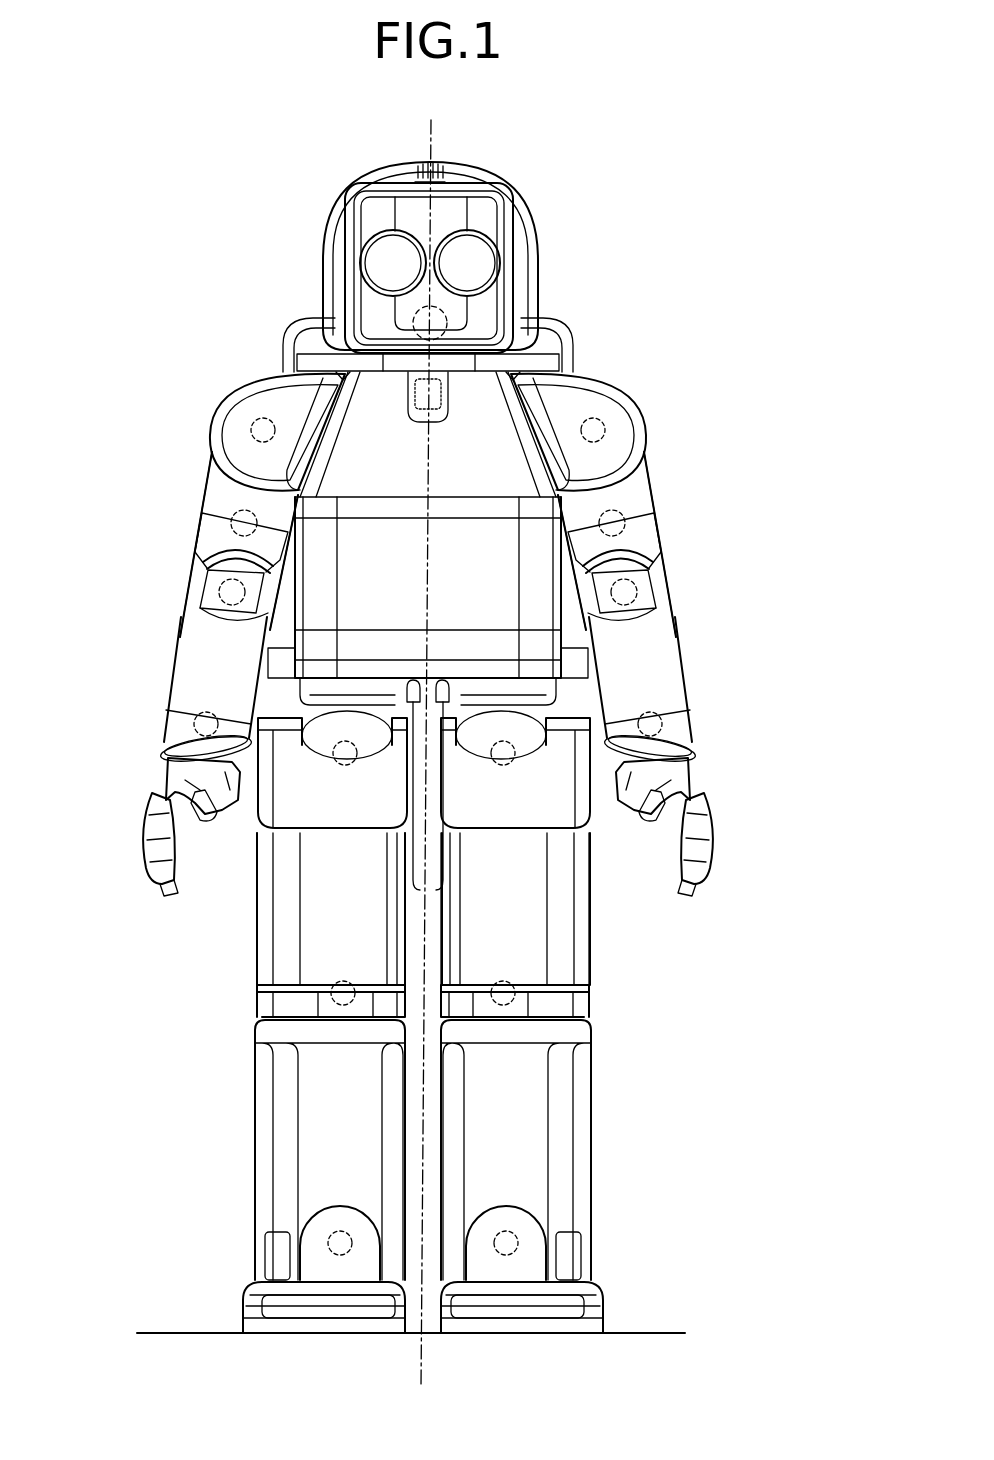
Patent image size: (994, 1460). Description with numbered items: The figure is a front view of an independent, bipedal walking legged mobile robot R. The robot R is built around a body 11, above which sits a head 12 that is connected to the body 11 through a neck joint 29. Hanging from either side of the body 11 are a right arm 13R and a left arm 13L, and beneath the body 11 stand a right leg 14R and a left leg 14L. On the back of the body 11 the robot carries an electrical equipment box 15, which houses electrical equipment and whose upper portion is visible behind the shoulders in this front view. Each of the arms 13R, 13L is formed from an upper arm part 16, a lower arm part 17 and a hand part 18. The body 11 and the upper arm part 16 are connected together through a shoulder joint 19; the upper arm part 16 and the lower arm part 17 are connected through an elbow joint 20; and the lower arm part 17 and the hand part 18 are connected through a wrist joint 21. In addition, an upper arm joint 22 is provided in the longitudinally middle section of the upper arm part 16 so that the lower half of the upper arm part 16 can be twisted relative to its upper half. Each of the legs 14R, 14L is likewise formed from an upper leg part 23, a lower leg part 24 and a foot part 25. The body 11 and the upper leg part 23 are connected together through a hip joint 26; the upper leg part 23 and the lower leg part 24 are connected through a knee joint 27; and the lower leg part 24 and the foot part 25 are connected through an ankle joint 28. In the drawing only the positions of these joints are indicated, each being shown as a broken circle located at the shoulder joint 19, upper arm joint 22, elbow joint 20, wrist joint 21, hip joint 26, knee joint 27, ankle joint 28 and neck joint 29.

The legged mobile robot R is at (604, 288).
The body 11 is at (490, 582).
The head 12 is at (497, 183).
The right arm 13R is at (178, 548).
The left arm 13L is at (688, 546).
The right leg 14R is at (240, 1045).
The left leg 14L is at (615, 1028).
The electrical equipment box 15 is at (296, 338).
The upper arm part 16 is at (213, 472).
The lower arm part 17 is at (185, 645).
The hand part 18 is at (165, 798).
The shoulder joint 19 is at (250, 425).
The elbow joint 20 is at (220, 592).
The wrist joint 21 is at (195, 723).
The upper arm joint 22 is at (232, 520).
The upper leg part 23 is at (258, 910).
The lower leg part 24 is at (262, 1147).
The foot part 25 is at (247, 1300).
The hip joint 26 is at (342, 765).
The knee joint 27 is at (343, 1005).
The ankle joint 28 is at (339, 1232).
The neck joint 29 is at (431, 322).